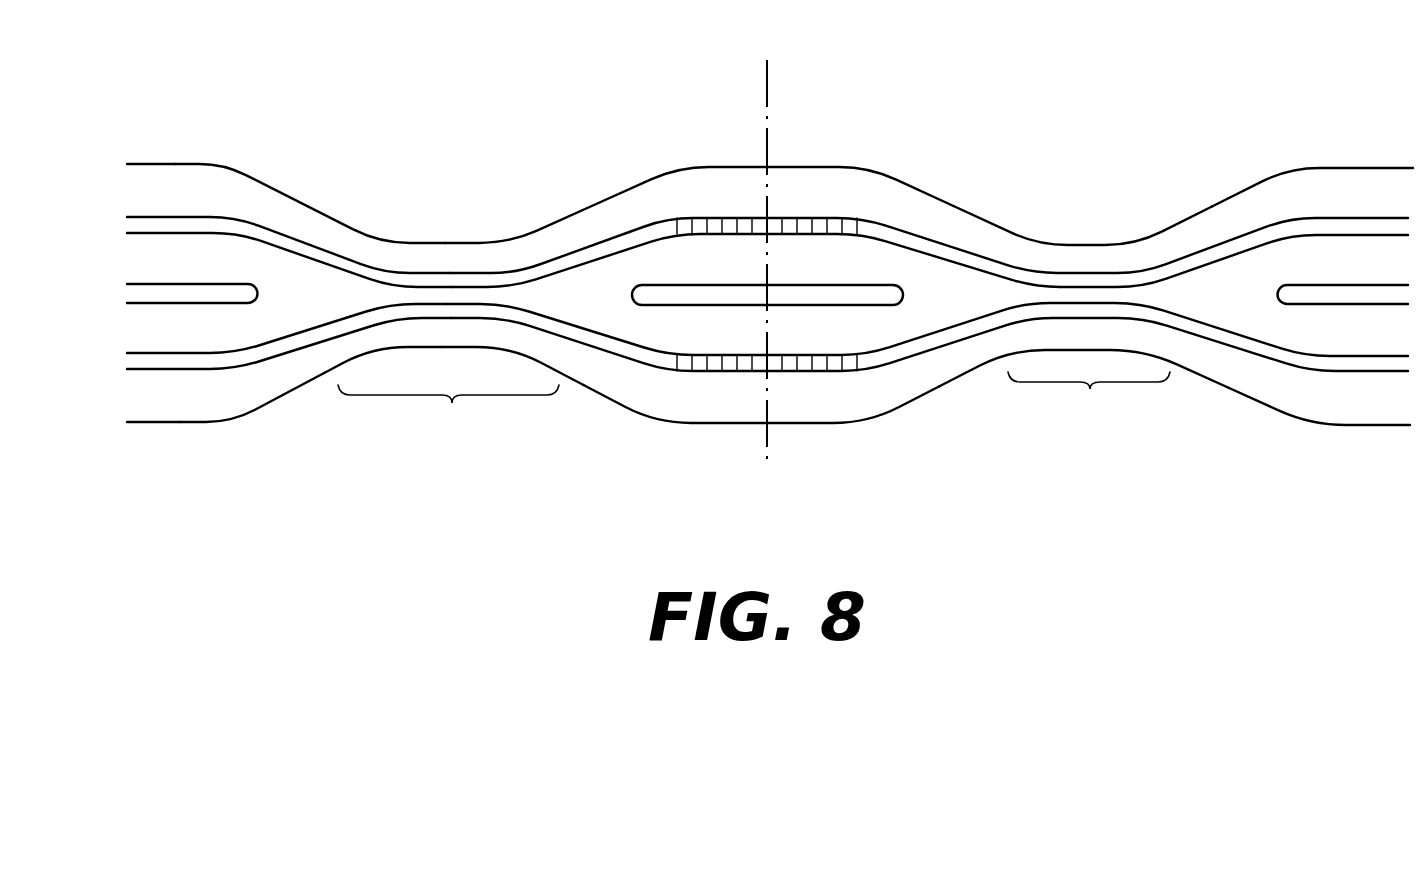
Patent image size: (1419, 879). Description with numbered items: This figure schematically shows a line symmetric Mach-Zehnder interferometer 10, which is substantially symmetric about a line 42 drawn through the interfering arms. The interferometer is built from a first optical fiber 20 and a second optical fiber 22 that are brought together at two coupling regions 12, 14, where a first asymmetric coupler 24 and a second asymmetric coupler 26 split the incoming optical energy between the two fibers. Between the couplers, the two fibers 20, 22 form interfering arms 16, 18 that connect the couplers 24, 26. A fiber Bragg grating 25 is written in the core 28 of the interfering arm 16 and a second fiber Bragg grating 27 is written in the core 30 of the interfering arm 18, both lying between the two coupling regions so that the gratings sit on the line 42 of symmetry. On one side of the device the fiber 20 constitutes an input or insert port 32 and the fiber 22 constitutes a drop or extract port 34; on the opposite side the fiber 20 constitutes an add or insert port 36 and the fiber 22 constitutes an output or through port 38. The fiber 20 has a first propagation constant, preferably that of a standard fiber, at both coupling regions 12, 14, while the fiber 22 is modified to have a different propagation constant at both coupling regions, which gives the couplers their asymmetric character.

The Mach-Zehnder interferometer 10 is at (829, 122).
The coupling region 12 is at (461, 391).
The coupling region 14 is at (1083, 385).
The interfering arm 16 is at (733, 180).
The interfering arm 18 is at (687, 403).
The first optical fiber 20 is at (282, 215).
The second optical fiber 22 is at (245, 385).
The first asymmetric coupler 24 is at (423, 240).
The fiber Bragg grating 25 is at (833, 217).
The second asymmetric coupler 26 is at (1078, 243).
The fiber Bragg grating 27 is at (797, 373).
The core 28 is at (197, 223).
The core 30 is at (193, 363).
The input port 32 is at (158, 180).
The drop port 34 is at (167, 397).
The add port 36 is at (1348, 185).
The output port 38 is at (1350, 405).
The line of symmetry 42 is at (763, 63).